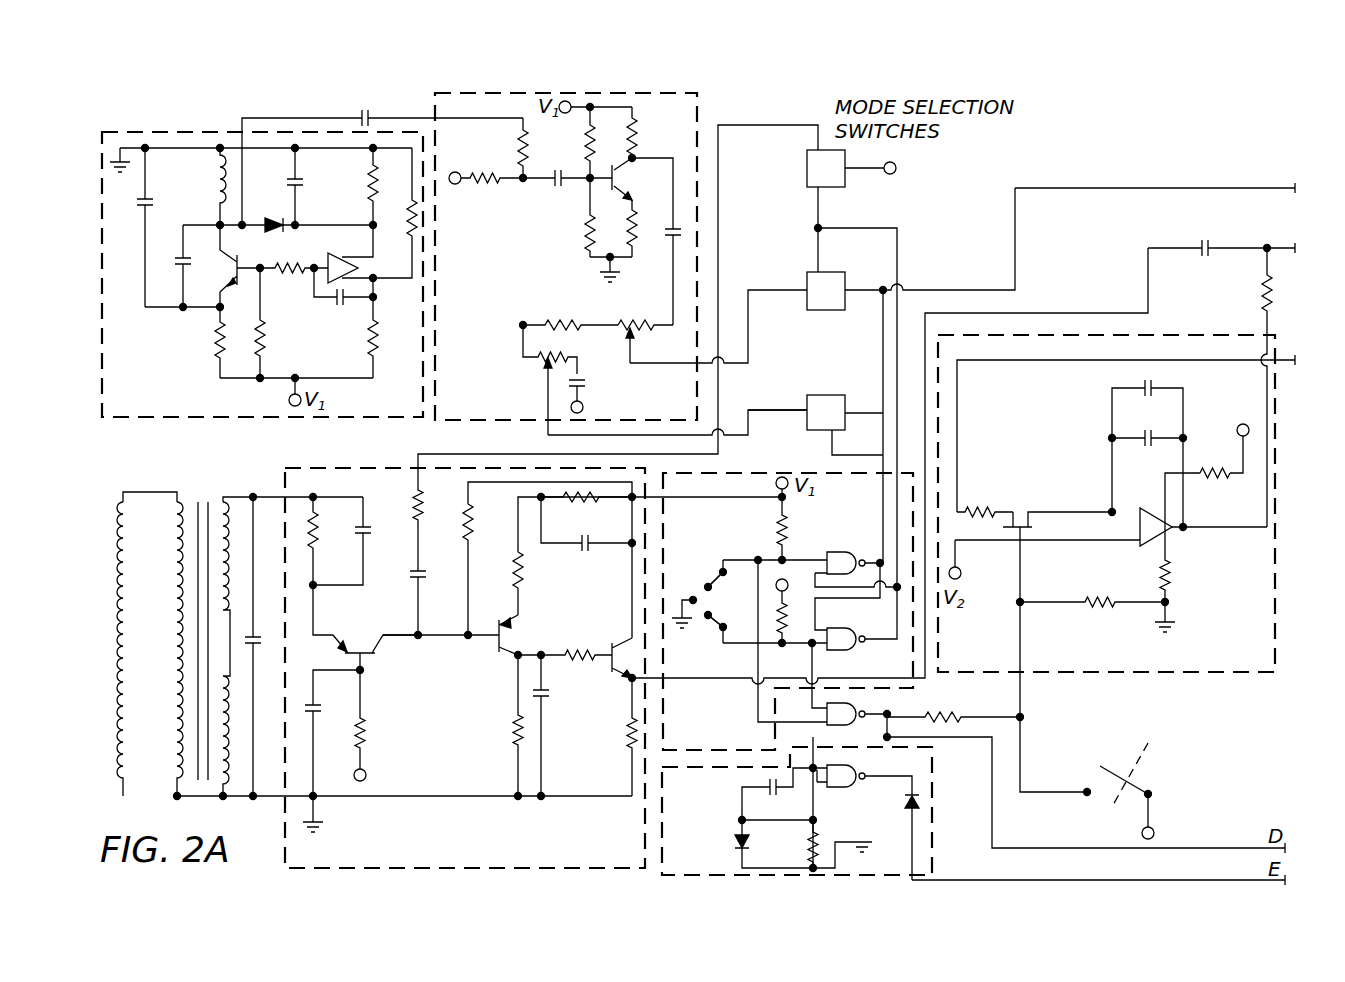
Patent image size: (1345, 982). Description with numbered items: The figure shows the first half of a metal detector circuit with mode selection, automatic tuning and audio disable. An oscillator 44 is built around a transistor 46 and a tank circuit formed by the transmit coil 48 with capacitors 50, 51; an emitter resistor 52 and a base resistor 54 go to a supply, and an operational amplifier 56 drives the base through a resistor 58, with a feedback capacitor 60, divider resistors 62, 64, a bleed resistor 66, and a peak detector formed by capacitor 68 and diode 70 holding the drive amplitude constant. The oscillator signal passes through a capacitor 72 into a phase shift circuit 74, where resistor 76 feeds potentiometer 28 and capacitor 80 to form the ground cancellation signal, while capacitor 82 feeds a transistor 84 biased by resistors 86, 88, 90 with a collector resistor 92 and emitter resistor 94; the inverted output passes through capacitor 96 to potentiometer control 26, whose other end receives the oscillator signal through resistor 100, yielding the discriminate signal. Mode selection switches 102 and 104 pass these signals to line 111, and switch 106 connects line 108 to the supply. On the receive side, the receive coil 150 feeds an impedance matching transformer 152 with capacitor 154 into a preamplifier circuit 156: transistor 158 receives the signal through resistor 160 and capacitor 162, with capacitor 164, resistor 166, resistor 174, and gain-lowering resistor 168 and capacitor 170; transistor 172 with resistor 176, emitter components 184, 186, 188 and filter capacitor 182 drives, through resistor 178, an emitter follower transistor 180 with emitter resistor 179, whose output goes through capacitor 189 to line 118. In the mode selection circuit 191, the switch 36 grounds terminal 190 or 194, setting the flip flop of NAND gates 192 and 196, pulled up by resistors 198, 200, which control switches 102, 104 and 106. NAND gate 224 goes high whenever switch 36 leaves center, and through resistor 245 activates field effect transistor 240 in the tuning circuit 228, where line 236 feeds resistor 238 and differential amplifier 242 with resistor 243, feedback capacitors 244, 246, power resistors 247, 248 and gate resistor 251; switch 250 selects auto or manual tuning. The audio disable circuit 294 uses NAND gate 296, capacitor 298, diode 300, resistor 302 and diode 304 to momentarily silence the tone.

The potentiometer control 26 is at (633, 318).
The potentiometer 28 is at (560, 357).
The mode selection switch 36 is at (715, 605).
The oscillator 44 is at (185, 130).
The transistor 46 is at (226, 275).
The transmit coil 48 is at (212, 190).
The capacitor 50 is at (181, 258).
The capacitor 51 is at (142, 212).
The emitter resistor 52 is at (213, 345).
The base resistor 54 is at (264, 338).
The operational amplifier 56 is at (340, 257).
The resistor 58 is at (290, 276).
The capacitor 60 is at (330, 302).
The voltage divider resistor 62 is at (367, 338).
The voltage divider resistor 64 is at (410, 214).
The bleed resistor 66 is at (366, 186).
The capacitor 68 is at (290, 178).
The diode 70 is at (274, 222).
The capacitor 72 is at (358, 112).
The phase shift circuit 74 is at (518, 420).
The resistor 76 is at (520, 140).
The capacitor 80 is at (586, 378).
The capacitor 82 is at (558, 188).
The transistor 84 is at (626, 182).
The resistor 86 is at (490, 183).
The resistor 88 is at (587, 150).
The resistor 90 is at (585, 238).
The collector resistor 92 is at (640, 134).
The emitter resistor 94 is at (630, 230).
The capacitor 96 is at (668, 230).
The resistor 100 is at (578, 312).
The mode selection switch 102 is at (830, 393).
The mode selection switch 104 is at (818, 312).
The switch 106 is at (805, 172).
The line 108 is at (760, 123).
The line 111 is at (1220, 186).
The line 118 is at (1278, 246).
The receive coil 150 is at (124, 604).
The impedance matching transformer 152 is at (180, 640).
The capacitor 154 is at (258, 640).
The preamplifier circuit 156 is at (298, 468).
The transistor 158 is at (365, 640).
The resistor 160 is at (318, 532).
The capacitor 162 is at (358, 541).
The capacitor 164 is at (338, 700).
The resistor 166 is at (370, 722).
The resistor 168 is at (412, 500).
The capacitor 170 is at (410, 575).
The transistor 172 is at (497, 648).
The resistor 174 is at (465, 520).
The resistor 176 is at (512, 731).
The resistor 178 is at (578, 646).
The emitter resistor 179 is at (628, 748).
The transistor 180 is at (612, 668).
The capacitor 182 is at (545, 704).
The resistor 184 is at (515, 570).
The resistor 186 is at (584, 503).
The capacitor 188 is at (586, 552).
The capacitor 189 is at (1198, 243).
The terminal 190 is at (720, 566).
The mode selection circuit 191 is at (800, 470).
The NAND gate 192 is at (846, 552).
The terminal 194 is at (720, 621).
The NAND gate 196 is at (858, 626).
The resistor 198 is at (775, 530).
The resistor 200 is at (786, 641).
The NAND gate 224 is at (860, 714).
The tuning circuit 228 is at (1115, 675).
The line 236 is at (1058, 362).
The resistor 238 is at (990, 505).
The field effect transistor 240 is at (1035, 530).
The differential amplifier 242 is at (1152, 548).
The resistor 243 is at (1258, 292).
The capacitor 244 is at (1143, 392).
The resistor 245 is at (930, 712).
The capacitor 246 is at (1145, 445).
The resistor 247 is at (1198, 480).
The resistor 248 is at (1172, 585).
The switch 250 is at (1135, 780).
The resistor 251 is at (1090, 598).
The audio disable circuit 294 is at (930, 832).
The NAND gate 296 is at (858, 768).
The capacitor 298 is at (752, 789).
The diode 300 is at (748, 842).
The resistor 302 is at (822, 840).
The diode 304 is at (904, 806).